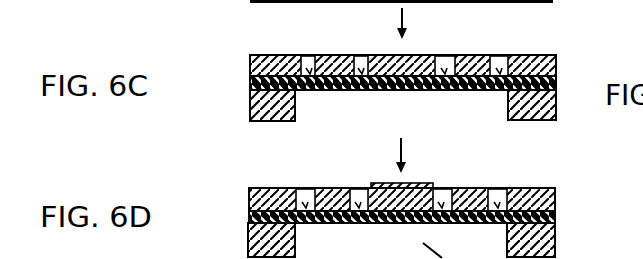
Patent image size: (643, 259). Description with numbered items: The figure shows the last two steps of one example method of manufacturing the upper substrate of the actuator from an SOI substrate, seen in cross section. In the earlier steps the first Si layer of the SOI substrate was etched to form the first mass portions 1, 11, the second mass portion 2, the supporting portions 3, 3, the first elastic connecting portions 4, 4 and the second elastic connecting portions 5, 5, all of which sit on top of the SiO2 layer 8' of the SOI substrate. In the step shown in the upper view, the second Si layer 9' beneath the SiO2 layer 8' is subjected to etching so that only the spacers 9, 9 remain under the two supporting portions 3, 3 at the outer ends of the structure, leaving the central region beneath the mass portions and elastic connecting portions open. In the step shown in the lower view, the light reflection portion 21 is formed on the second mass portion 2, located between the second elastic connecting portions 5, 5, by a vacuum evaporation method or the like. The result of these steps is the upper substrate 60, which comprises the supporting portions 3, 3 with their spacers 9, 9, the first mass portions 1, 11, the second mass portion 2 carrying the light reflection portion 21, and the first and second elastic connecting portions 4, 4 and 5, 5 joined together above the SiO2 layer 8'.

In FIG. 6C, the first mass portion 1 is at (477, 55).
In FIG. 6C, the second mass portion 2 is at (413, 55).
In FIG. 6D, the second mass portion 2 is at (386, 183).
In FIG. 6C, the supporting portion 3 is at (250, 60).
In FIG. 6D, the supporting portion 3 is at (250, 188).
In FIG. 6C, the first elastic connecting portion 4 is at (305, 55).
In FIG. 6D, the first elastic connecting portion 4 is at (302, 188).
In FIG. 6C, the second elastic connecting portion 5 is at (360, 55).
In FIG. 6D, the second elastic connecting portion 5 is at (358, 188).
In FIG. 6C, the SiO2 layer 8' is at (369, 88).
In FIG. 6D, the SiO2 layer 8' is at (369, 218).
In FIG. 6C, the spacer 9 is at (390, 115).
In FIG. 6D, the spacer 9 is at (419, 241).
In FIG. 6C, the second Si layer 9' is at (366, 8).
In FIG. 6C, the first mass portion 11 is at (331, 55).
In FIG. 6D, the first mass portion 11 is at (331, 188).
In FIG. 6D, the light reflection portion 21 is at (419, 184).
In FIG. 6D, the upper substrate 60 is at (572, 195).